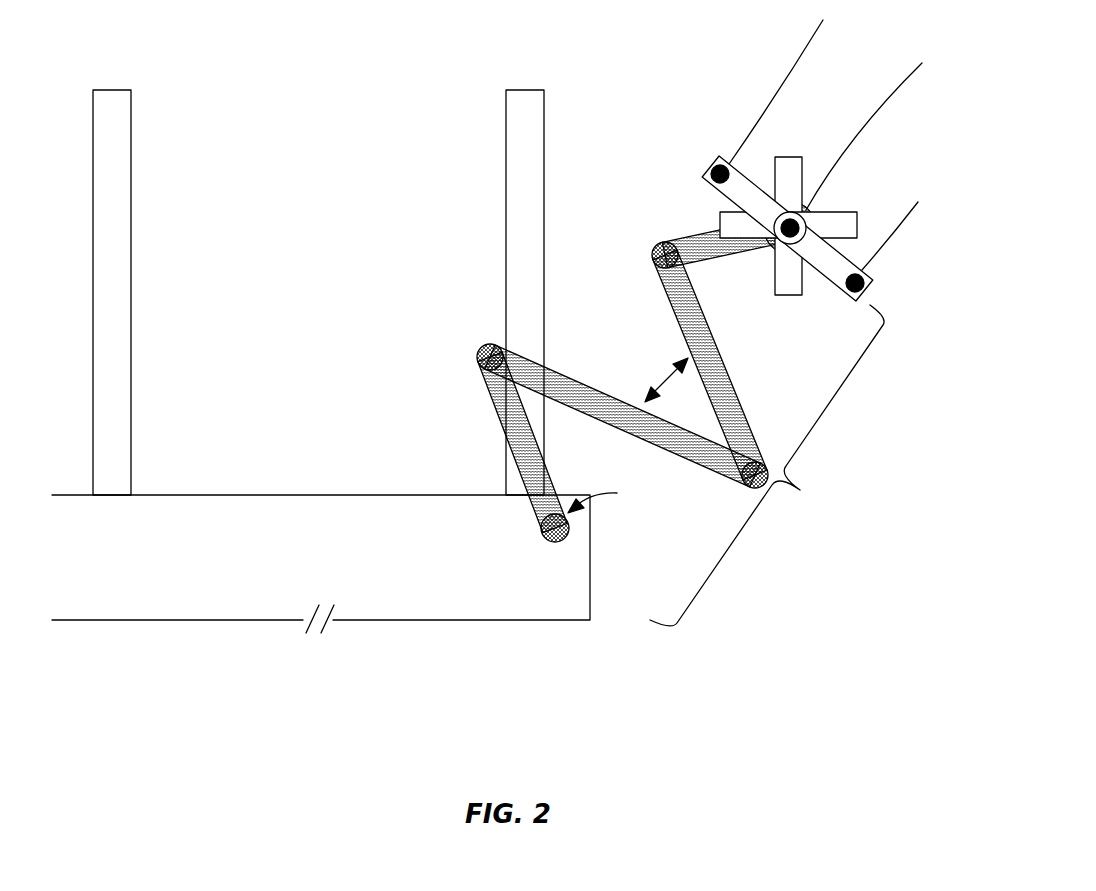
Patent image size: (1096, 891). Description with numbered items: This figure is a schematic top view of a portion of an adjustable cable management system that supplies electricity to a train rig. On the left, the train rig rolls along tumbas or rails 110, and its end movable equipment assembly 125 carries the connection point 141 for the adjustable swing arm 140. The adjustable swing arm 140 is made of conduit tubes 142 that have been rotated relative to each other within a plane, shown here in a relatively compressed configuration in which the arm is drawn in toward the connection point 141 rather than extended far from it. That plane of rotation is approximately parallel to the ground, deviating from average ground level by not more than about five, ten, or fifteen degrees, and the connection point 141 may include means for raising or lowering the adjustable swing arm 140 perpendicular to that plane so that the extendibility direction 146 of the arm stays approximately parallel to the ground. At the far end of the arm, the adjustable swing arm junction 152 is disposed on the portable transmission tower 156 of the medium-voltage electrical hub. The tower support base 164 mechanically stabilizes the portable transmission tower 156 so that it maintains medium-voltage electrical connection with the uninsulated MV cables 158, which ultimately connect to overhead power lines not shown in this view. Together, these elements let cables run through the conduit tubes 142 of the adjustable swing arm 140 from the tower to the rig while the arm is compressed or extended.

The tumbas or rails 110 is at (506, 273).
The end movable equipment assembly 125 is at (336, 565).
The adjustable swing arm 140 is at (767, 465).
The connection point 141 is at (619, 495).
The conduit tubes 142 is at (663, 280).
The extendibility direction 146 is at (660, 383).
The adjustable swing arm junction 152 is at (725, 254).
The portable transmission tower 156 is at (750, 198).
The uninsulated MV cables 158 is at (908, 212).
The tower support base 164 is at (790, 285).